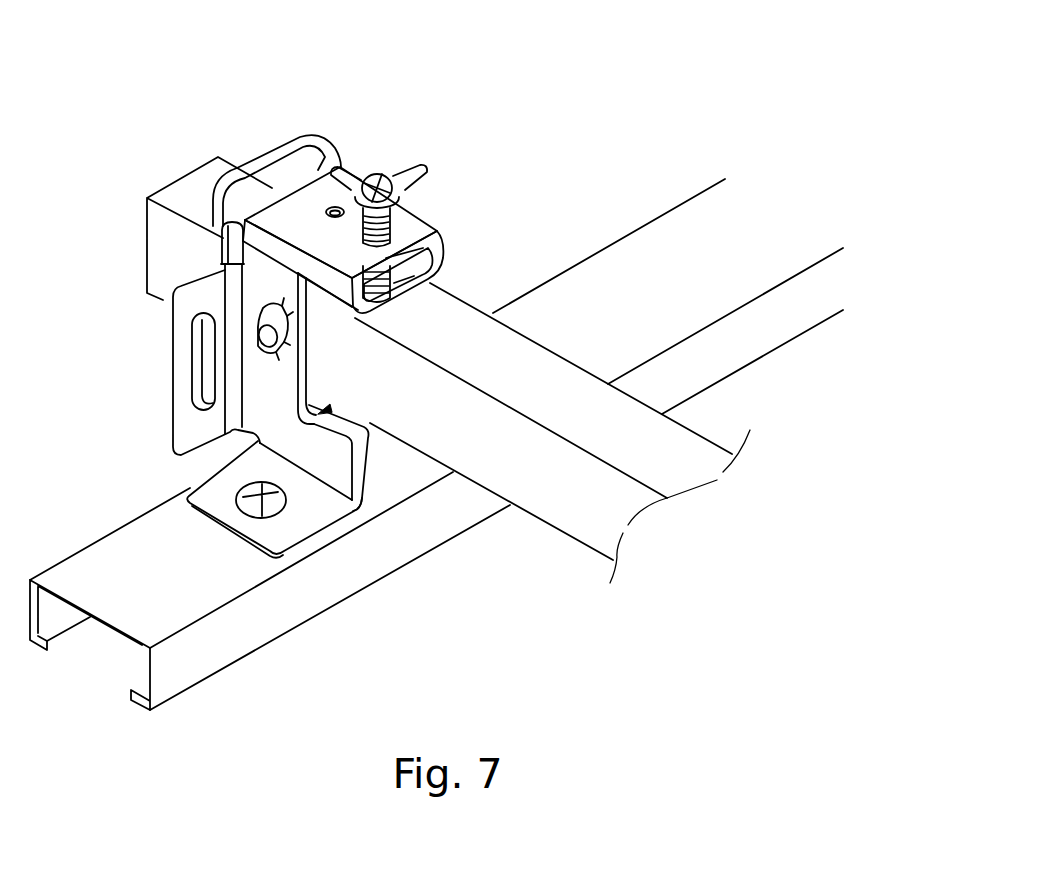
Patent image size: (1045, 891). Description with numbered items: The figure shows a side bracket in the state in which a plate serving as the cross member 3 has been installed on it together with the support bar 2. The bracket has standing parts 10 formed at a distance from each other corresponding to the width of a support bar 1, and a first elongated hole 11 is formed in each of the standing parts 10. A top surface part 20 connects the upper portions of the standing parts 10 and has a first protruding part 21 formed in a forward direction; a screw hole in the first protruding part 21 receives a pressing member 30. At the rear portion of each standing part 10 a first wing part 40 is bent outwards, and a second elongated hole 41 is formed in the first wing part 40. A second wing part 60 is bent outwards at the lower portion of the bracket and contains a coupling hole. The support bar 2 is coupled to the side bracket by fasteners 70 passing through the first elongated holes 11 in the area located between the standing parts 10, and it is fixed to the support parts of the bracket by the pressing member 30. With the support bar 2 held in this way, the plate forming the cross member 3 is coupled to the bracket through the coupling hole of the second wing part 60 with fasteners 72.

The support bar 1 is at (334, 116).
The support bar 2 is at (457, 305).
The cross member 3 is at (257, 630).
The standing part 10 is at (304, 366).
The first elongated hole 11 is at (253, 308).
The top surface part 20 is at (328, 228).
The first protruding part 21 is at (332, 285).
The pressing member 30 is at (408, 168).
The first wing part 40 is at (175, 362).
The second elongated hole 41 is at (197, 360).
The second wing part 60 is at (207, 499).
The fastener 70 is at (257, 304).
The fastener 72 is at (238, 491).